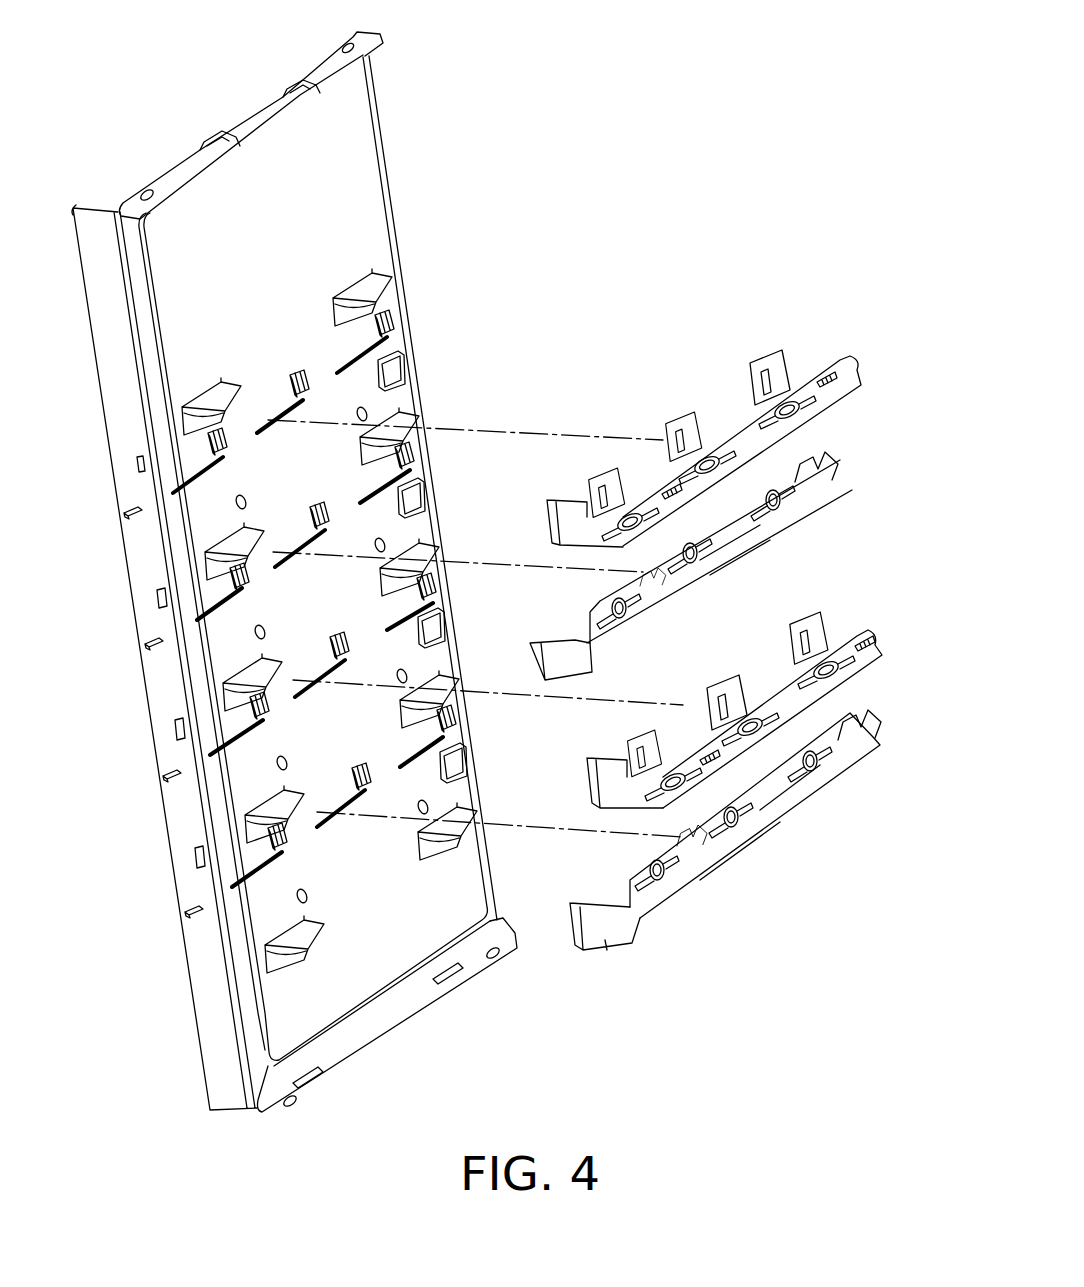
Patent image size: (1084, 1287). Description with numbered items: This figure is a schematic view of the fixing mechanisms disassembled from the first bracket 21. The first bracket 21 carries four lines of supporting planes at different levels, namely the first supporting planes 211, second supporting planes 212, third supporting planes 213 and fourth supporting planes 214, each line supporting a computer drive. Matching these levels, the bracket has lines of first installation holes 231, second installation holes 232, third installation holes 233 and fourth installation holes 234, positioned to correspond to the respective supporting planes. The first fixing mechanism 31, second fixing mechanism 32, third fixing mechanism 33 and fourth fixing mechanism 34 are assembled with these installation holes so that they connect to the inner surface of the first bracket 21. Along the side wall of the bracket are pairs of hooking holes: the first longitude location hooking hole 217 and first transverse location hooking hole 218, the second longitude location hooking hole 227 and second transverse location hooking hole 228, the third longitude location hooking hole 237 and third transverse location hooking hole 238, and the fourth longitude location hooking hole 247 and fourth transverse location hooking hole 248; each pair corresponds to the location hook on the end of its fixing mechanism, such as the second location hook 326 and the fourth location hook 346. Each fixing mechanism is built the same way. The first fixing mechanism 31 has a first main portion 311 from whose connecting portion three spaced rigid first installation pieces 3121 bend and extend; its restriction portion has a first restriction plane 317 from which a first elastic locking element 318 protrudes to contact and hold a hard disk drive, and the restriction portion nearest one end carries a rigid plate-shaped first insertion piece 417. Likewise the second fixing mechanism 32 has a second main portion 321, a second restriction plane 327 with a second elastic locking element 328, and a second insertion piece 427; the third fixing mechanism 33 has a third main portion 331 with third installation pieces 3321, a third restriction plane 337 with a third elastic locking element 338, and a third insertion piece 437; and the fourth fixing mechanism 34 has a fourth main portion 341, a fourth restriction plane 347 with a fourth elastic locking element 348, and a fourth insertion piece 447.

The first bracket 21 is at (392, 92).
The first supporting planes 211 is at (407, 393).
The second supporting planes 212 is at (420, 540).
The third supporting planes 213 is at (440, 660).
The fourth supporting planes 214 is at (480, 800).
The first longitude location hooking hole 217 is at (137, 457).
The first transverse location hooking hole 218 is at (124, 509).
The second longitude location hooking hole 227 is at (157, 597).
The second transverse location hooking hole 228 is at (145, 644).
The first installation holes 231 is at (393, 337).
The second installation holes 232 is at (415, 470).
The third installation holes 233 is at (432, 603).
The fourth installation holes 234 is at (478, 740).
The third longitude location hooking hole 237 is at (175, 728).
The third transverse location hooking hole 238 is at (165, 776).
The fourth longitude location hooking hole 247 is at (195, 856).
The fourth transverse location hooking hole 248 is at (190, 912).
The first fixing mechanism 31 is at (657, 405).
The first main portion 311 is at (713, 418).
The first installation pieces 3121 is at (780, 352).
The first restriction plane 317 is at (740, 437).
The first elastic locking element 318 is at (810, 405).
The first insertion piece 417 is at (828, 362).
The second fixing mechanism 32 is at (668, 620).
The second main portion 321 is at (750, 560).
The second location hook 326 is at (577, 643).
The second restriction plane 327 is at (765, 530).
The second elastic locking element 328 is at (785, 490).
The second insertion piece 427 is at (832, 468).
The third fixing mechanism 33 is at (888, 608).
The third main portion 331 is at (682, 733).
The third installation pieces 3321 is at (840, 604).
The third restriction plane 337 is at (777, 692).
The third elastic locking element 338 is at (825, 668).
The third insertion piece 437 is at (880, 632).
The fourth fixing mechanism 34 is at (727, 910).
The fourth main portion 341 is at (768, 855).
The fourth location hook 346 is at (607, 947).
The fourth restriction plane 347 is at (797, 800).
The fourth elastic locking element 348 is at (823, 767).
The fourth insertion piece 447 is at (870, 724).